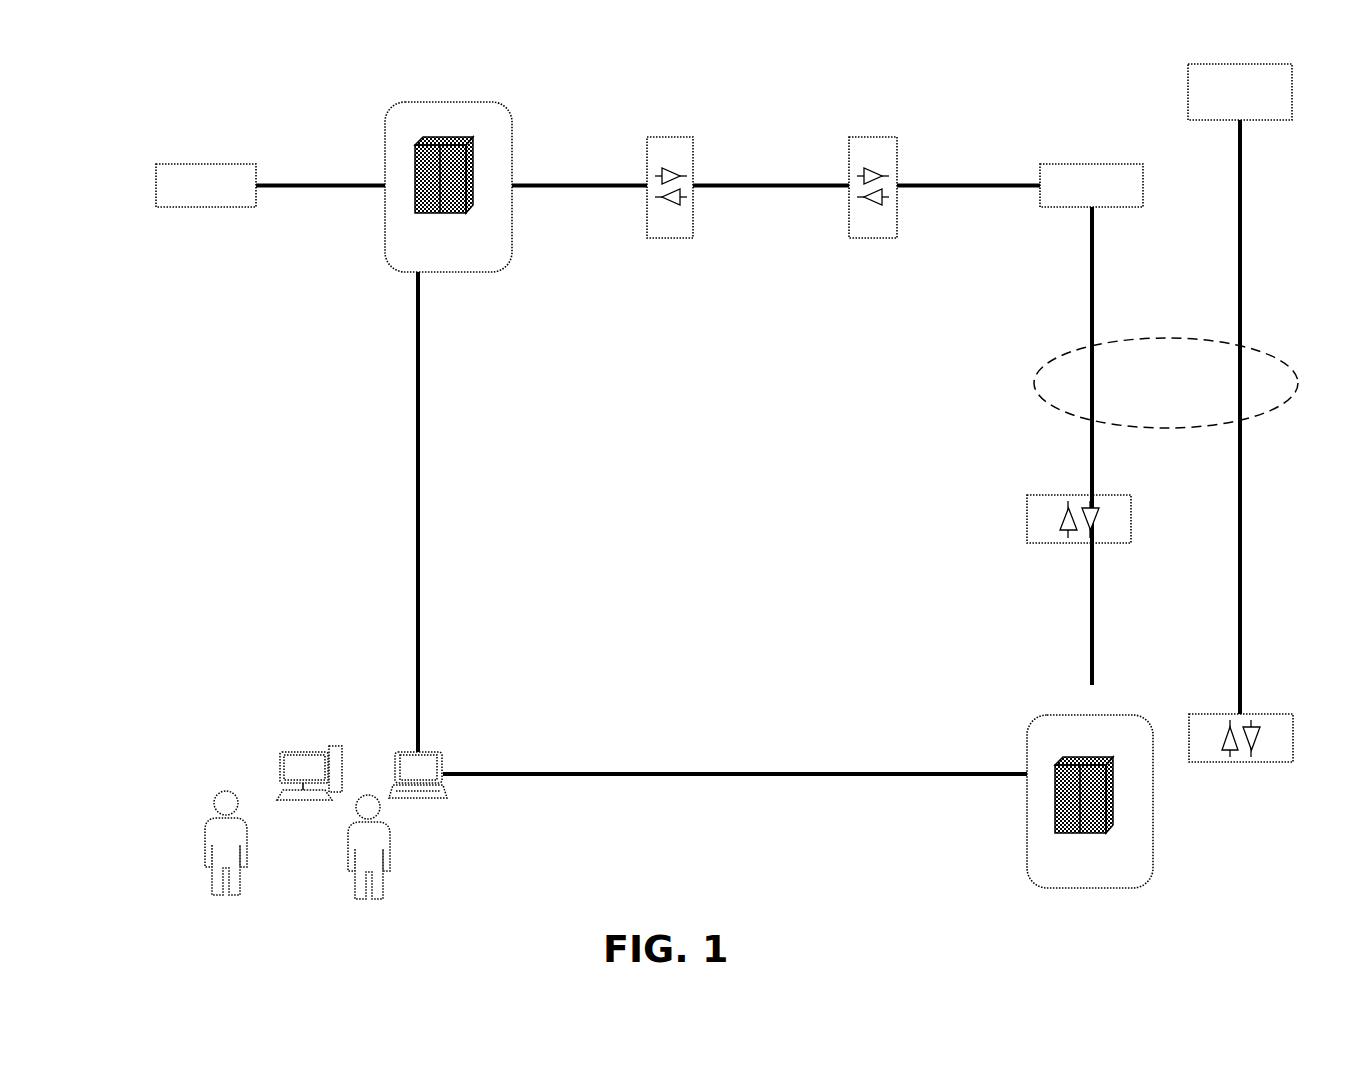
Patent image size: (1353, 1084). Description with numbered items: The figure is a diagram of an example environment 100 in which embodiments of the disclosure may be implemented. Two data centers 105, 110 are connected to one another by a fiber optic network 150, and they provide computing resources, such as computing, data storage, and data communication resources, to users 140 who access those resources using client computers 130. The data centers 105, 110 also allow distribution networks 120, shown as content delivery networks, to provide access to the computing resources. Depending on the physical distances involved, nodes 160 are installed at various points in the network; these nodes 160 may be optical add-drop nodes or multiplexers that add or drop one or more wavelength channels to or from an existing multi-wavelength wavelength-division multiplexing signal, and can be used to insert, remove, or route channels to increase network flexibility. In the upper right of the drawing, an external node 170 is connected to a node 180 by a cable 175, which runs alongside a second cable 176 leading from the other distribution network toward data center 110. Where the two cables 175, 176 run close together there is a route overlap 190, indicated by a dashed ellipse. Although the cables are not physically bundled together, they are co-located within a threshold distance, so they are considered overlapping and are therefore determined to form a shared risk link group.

The environment 100 is at (272, 94).
The data center 105 is at (447, 175).
The data center 110 is at (1088, 791).
The distribution network 120 is at (157, 165).
The client computer 130 is at (283, 773).
The user 140 is at (212, 812).
The fiber optic network 150 is at (415, 490).
The node 160 is at (667, 135).
The external node 170 is at (1188, 72).
The cable 175 is at (1238, 285).
The cable 176 is at (1090, 292).
The node 180 is at (1286, 713).
The route overlap 190 is at (1033, 383).